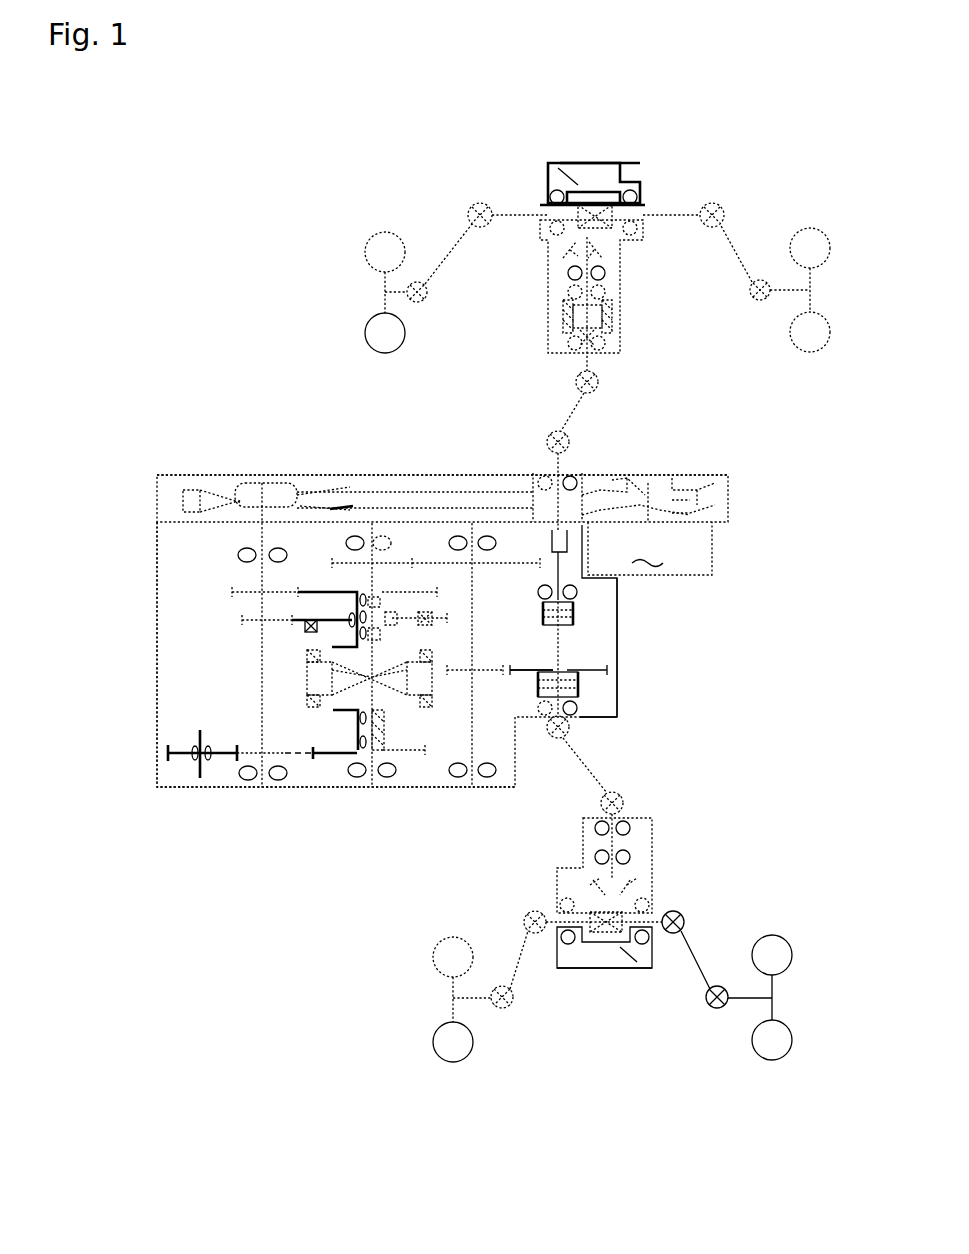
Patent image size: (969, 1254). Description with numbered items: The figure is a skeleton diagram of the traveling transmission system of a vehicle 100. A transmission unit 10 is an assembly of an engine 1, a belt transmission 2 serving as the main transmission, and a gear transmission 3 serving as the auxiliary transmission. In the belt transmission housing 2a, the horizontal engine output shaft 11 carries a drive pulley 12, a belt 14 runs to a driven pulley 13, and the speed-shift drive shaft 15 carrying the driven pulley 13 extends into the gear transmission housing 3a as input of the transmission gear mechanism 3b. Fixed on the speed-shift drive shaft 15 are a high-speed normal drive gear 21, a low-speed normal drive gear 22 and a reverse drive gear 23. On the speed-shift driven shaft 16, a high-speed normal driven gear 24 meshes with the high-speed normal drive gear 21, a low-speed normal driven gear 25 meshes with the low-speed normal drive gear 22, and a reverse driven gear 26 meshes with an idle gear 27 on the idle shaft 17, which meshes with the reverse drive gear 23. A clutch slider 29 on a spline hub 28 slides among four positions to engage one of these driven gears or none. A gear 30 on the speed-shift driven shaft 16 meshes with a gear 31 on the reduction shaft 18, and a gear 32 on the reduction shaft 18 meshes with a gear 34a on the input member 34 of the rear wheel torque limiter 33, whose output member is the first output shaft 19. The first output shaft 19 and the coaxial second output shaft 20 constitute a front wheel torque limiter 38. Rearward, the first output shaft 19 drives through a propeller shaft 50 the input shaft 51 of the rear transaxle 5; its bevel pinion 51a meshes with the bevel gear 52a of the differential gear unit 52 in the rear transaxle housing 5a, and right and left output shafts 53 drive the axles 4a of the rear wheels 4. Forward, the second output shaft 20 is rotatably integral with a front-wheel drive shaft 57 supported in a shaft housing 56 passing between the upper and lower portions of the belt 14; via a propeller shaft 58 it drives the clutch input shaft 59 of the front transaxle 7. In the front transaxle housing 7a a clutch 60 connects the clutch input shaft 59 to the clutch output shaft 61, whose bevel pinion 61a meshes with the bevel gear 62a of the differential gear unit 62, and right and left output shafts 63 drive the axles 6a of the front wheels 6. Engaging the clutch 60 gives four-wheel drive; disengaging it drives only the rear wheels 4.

The vehicle 100 is at (200, 233).
The engine 1 is at (650, 548).
The belt transmission 2 is at (757, 482).
The belt transmission housing 2a is at (467, 472).
The gear transmission 3 is at (647, 618).
The gear transmission housing 3a is at (620, 640).
The transmission gear mechanism 3b is at (215, 655).
The rear wheels 4 is at (448, 940).
The axles 4a is at (468, 1007).
The rear transaxle 5 is at (656, 990).
The rear transaxle housing 5a is at (660, 825).
The front wheels 6 is at (380, 240).
The axles 6a is at (398, 290).
The front transaxle 7 is at (528, 281).
The front transaxle housing 7a is at (590, 162).
The transmission unit 10 is at (685, 695).
The engine output shaft 11 is at (633, 481).
The drive pulley 12 is at (680, 478).
The driven pulley 13 is at (252, 482).
The belt 14 is at (405, 490).
The speed-shift drive shaft 15 is at (265, 787).
The speed-shift driven shaft 16 is at (378, 790).
The idle shaft 17 is at (200, 730).
The reduction shaft 18 is at (470, 740).
The first output shaft 19 is at (555, 648).
The second output shaft 20 is at (557, 568).
The high-speed normal drive gear 21 is at (232, 590).
The low-speed normal drive gear 22 is at (242, 618).
The reverse drive gear 23 is at (258, 750).
The high-speed normal driven gear 24 is at (440, 592).
The low-speed normal driven gear 25 is at (445, 625).
The reverse driven gear 26 is at (400, 748).
The idle gear 27 is at (212, 748).
The spline hub 28 is at (343, 685).
The clutch slider 29 is at (307, 677).
The gear 30 is at (395, 562).
The gear 31 is at (497, 568).
The gear 32 is at (486, 665).
The rear wheel torque limiter 33 is at (616, 684).
The input member 34 is at (580, 680).
The gear 34a is at (518, 675).
The front wheel torque limiter 38 is at (589, 617).
The propeller shaft 50 is at (615, 770).
The input shaft 51 is at (595, 843).
The bevel pinion 51a is at (575, 877).
The differential gear unit 52 is at (610, 961).
The bevel gear 52a is at (650, 880).
The output shafts 53 is at (553, 918).
The shaft housing 56 is at (570, 473).
The front-wheel drive shaft 57 is at (556, 468).
The propeller shaft 58 is at (554, 396).
The clutch input shaft 59 is at (596, 366).
The clutch 60 is at (624, 325).
The clutch output shaft 61 is at (600, 283).
The bevel pinion 61a is at (605, 256).
The differential gear unit 62 is at (614, 169).
The bevel gear 62a is at (558, 168).
The output shafts 63 is at (521, 210).